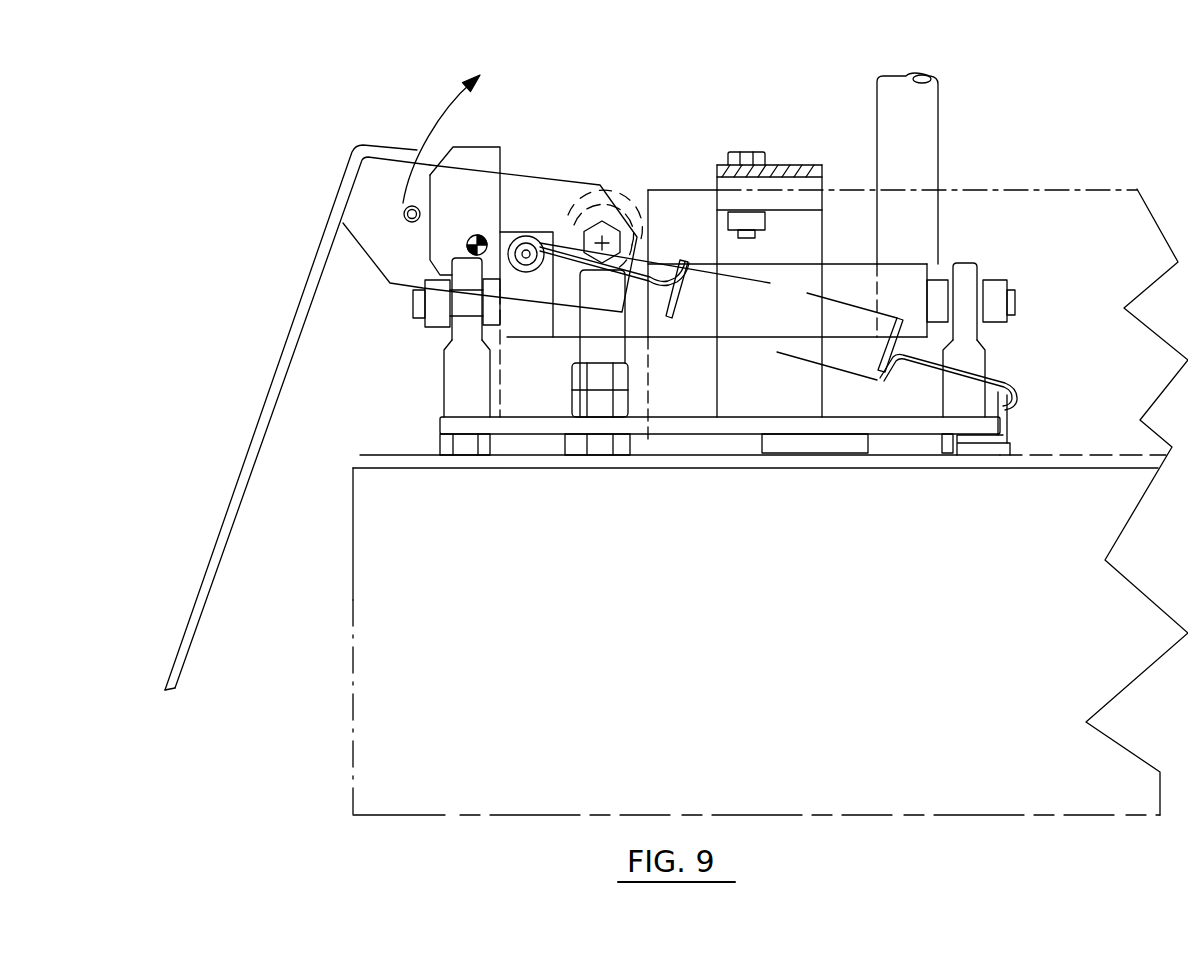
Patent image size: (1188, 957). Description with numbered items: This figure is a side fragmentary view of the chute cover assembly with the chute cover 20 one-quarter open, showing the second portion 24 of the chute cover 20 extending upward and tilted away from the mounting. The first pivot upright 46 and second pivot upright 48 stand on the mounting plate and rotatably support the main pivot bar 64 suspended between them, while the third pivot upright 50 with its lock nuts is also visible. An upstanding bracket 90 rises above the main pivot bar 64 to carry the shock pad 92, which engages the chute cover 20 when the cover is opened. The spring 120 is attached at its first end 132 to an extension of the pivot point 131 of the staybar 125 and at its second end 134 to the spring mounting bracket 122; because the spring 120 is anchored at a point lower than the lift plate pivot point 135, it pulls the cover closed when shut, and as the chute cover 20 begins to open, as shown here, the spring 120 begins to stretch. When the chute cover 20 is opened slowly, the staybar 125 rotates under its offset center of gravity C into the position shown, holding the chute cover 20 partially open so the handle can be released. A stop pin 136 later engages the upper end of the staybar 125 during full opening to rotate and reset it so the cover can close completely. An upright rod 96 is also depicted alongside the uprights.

The chute cover 20 is at (275, 246).
The second portion 24 is at (283, 357).
The first pivot upright 46 is at (453, 372).
The second pivot upright 48 is at (968, 262).
The third pivot upright 50 is at (637, 237).
The main pivot bar 64 is at (847, 273).
The upstanding bracket 90 is at (732, 240).
The shock pad 92 is at (780, 167).
The rod 96 is at (933, 128).
The spring 120 is at (838, 357).
The spring mounting bracket 122 is at (990, 450).
The staybar 125 is at (500, 148).
The pivot point 131 is at (528, 266).
The first end 132 is at (545, 273).
The second end 134 is at (1018, 410).
The lift plate pivot point 135 is at (603, 242).
The stop pin 136 is at (403, 207).
The center of gravity C is at (486, 240).